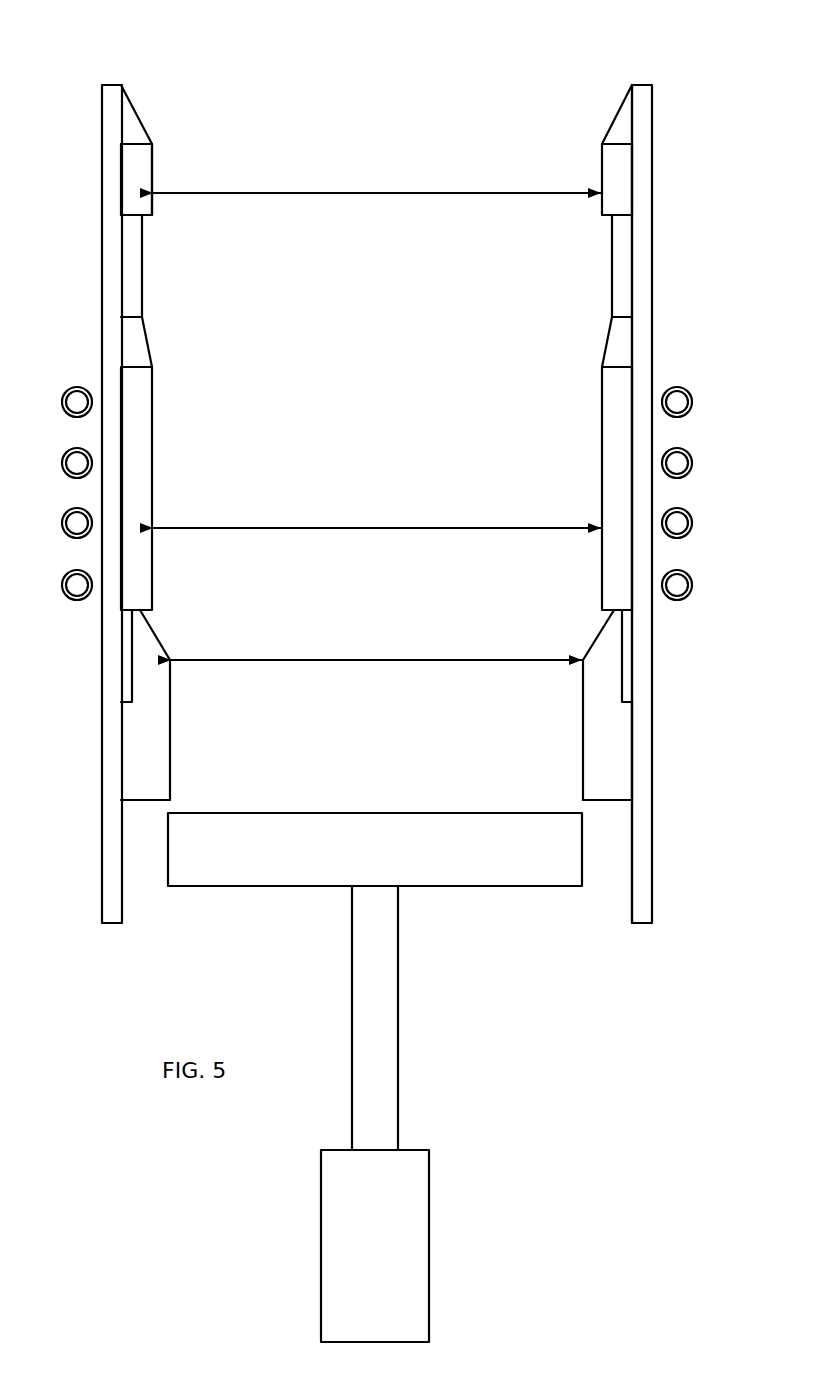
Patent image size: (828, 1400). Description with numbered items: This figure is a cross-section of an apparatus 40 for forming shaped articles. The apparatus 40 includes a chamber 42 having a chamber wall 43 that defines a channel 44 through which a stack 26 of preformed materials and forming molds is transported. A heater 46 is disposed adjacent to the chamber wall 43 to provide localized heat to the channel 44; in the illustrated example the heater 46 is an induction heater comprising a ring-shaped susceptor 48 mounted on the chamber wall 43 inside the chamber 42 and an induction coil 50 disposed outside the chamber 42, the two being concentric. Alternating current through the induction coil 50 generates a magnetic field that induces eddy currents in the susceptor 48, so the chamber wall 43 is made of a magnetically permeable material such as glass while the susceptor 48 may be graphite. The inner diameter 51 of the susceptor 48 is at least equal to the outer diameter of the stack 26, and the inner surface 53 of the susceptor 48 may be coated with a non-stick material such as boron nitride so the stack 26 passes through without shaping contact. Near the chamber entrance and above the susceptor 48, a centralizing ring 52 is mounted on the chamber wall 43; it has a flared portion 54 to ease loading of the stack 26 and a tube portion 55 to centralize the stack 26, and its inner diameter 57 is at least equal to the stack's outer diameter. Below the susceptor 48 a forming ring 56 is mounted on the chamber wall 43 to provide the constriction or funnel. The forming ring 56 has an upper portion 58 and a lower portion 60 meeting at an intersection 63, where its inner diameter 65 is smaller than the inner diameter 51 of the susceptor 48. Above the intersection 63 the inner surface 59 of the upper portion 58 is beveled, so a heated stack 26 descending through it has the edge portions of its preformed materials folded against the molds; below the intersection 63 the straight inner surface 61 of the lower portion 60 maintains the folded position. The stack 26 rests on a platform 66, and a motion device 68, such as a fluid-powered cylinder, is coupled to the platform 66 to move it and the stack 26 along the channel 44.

The apparatus 40 is at (618, 61).
The chamber 42 is at (654, 210).
The chamber wall 43 is at (640, 138).
The flared portion 54 is at (146, 113).
The centralizing ring 52 is at (154, 149).
The tube portion 55 is at (153, 189).
The inner diameter of the centralizing ring 57 is at (377, 182).
The stack 26 is at (149, 261).
The channel 44 is at (390, 349).
The heater 46 is at (76, 385).
The induction coil 50 is at (63, 456).
The susceptor 48 is at (130, 573).
The inner surface of the susceptor 53 is at (601, 450).
The inner diameter of the susceptor 51 is at (377, 514).
The inner surface of the upper forming ring portion 59 is at (601, 628).
The intersection 63 is at (173, 658).
The inner diameter of the forming ring 65 is at (376, 646).
The upper portion 58 is at (623, 653).
The lower portion 60 is at (618, 720).
The inner surface of the lower forming ring portion 61 is at (582, 721).
The forming ring 56 is at (635, 746).
The platform 66 is at (500, 888).
The motion device 68 is at (430, 1227).